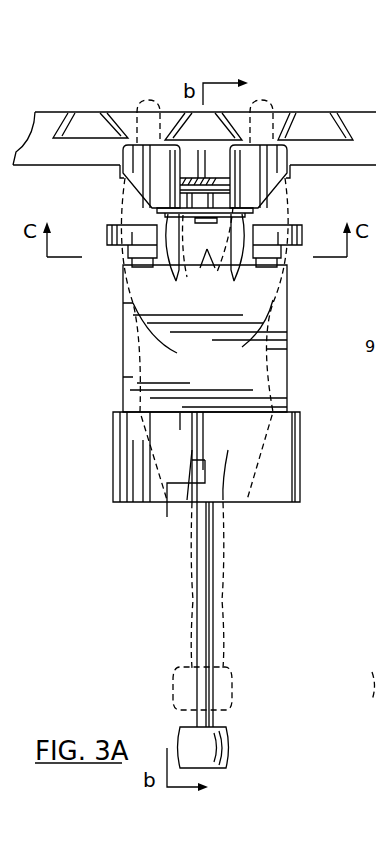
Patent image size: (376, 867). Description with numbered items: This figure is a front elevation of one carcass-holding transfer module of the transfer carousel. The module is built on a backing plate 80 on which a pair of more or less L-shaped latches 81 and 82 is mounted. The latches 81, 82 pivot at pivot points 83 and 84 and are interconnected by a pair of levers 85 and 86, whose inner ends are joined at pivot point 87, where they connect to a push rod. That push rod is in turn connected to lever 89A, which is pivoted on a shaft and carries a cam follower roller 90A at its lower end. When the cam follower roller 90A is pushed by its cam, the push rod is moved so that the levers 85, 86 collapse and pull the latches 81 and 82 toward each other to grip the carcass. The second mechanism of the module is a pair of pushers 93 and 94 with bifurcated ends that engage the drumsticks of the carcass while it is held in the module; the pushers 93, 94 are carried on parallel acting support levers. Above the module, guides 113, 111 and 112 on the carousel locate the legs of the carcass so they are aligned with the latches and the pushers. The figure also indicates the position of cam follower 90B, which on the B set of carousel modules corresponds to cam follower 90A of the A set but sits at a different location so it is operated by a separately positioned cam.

The backing plate 80 is at (123, 343).
The latch 81 is at (130, 157).
The latch 82 is at (278, 157).
The pivot point 83 is at (154, 339).
The pivot point 84 is at (252, 339).
The lever 85 is at (193, 249).
The lever 86 is at (213, 249).
The pivot point 87 is at (204, 177).
The lever 89A is at (205, 588).
The cam follower roller 90A is at (185, 738).
The cam follower 90B is at (375, 688).
The pusher 93 is at (108, 235).
The pusher 94 is at (300, 235).
The guide 111 is at (185, 110).
The guide 112 is at (313, 117).
The guide 113 is at (82, 112).